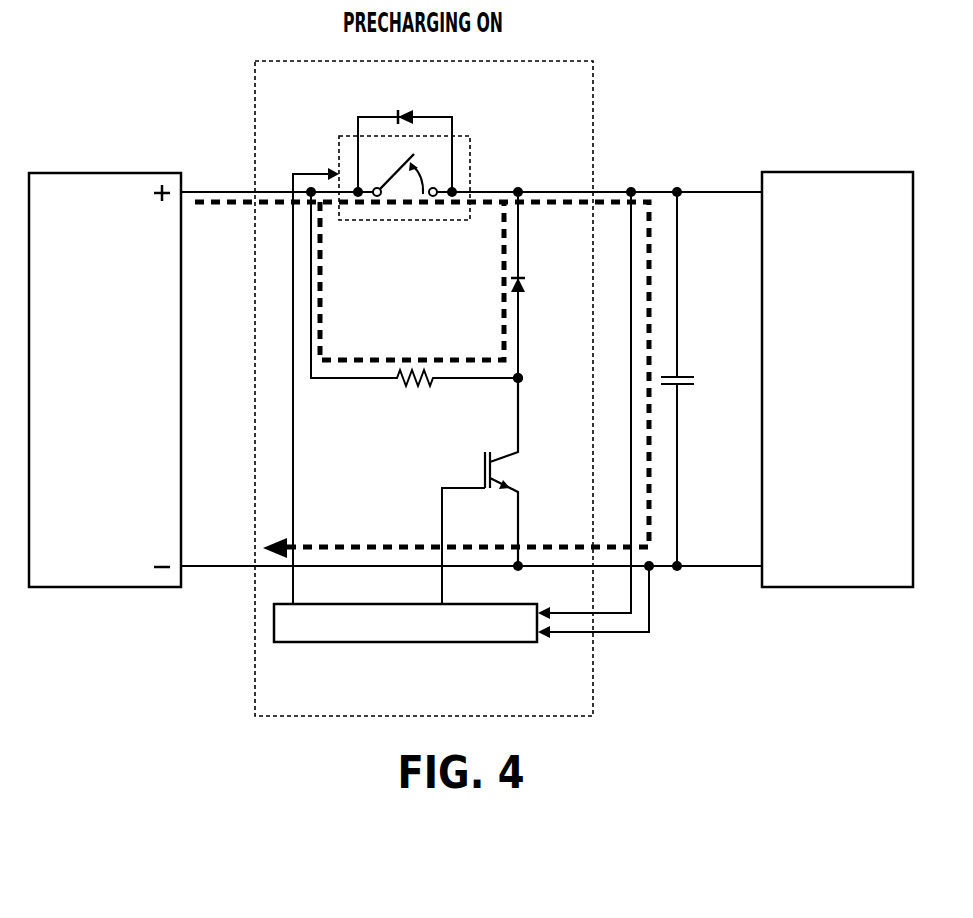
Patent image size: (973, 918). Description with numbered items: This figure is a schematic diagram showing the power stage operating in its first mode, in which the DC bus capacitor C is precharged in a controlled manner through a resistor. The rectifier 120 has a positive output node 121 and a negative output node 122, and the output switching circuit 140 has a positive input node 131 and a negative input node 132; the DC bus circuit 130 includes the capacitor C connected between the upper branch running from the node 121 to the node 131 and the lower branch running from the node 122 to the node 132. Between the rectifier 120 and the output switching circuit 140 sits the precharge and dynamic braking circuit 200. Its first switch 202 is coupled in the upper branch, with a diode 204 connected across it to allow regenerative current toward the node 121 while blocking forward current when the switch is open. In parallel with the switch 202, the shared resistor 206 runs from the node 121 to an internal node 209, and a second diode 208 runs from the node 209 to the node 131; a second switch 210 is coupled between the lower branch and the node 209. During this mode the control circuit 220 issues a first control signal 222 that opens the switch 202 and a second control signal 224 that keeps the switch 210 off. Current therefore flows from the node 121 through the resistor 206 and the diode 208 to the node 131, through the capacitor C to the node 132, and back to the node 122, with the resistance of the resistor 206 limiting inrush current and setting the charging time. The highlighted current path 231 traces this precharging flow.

The rectifier 120 is at (103, 173).
The positive output node of the rectifier 121 is at (237, 192).
The negative output node of the rectifier 122 is at (237, 566).
The DC bus circuit 130 is at (648, 153).
The positive input node 131 is at (705, 192).
The negative input node 132 is at (705, 566).
The output switching circuit 140 is at (837, 172).
The precharge and dynamic braking circuit 200 is at (254, 680).
The first switch 202 is at (464, 136).
The diode 204 is at (405, 134).
The resistor 206 is at (414, 306).
The second diode 208 is at (539, 285).
The internal node 209 is at (520, 377).
The second switch 210 is at (490, 472).
The precharge and dynamic braking control circuit 220 is at (404, 604).
The first control signal 222 is at (293, 474).
The second control signal 224 is at (443, 530).
The precharging current path 231 is at (342, 544).